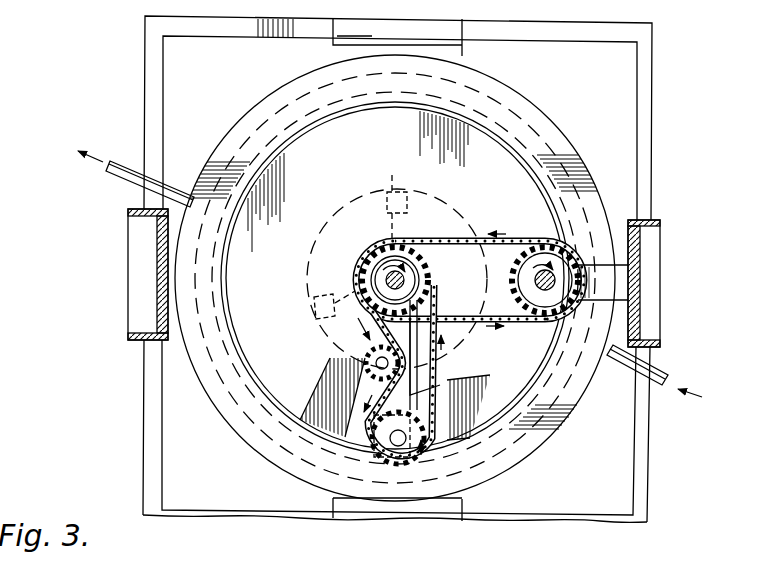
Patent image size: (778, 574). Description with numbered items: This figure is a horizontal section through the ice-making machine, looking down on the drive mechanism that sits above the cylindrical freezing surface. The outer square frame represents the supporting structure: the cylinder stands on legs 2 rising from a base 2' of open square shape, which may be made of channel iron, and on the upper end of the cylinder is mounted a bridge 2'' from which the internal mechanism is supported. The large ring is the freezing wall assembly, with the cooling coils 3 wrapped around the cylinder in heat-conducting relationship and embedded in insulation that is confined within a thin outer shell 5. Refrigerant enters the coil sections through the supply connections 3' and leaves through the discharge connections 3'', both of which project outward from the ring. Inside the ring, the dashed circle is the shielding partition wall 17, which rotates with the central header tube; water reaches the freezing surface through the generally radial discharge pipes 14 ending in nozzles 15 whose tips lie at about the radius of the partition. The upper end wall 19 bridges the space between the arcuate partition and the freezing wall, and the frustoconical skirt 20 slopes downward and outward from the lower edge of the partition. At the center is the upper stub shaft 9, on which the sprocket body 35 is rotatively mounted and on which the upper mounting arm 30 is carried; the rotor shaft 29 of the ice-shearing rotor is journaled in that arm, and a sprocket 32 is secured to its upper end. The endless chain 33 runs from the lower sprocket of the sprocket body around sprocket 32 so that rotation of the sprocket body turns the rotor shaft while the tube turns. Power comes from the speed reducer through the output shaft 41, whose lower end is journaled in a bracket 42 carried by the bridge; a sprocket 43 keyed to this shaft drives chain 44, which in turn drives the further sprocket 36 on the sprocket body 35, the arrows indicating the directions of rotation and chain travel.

The legs 2 is at (388, 275).
The base 2' is at (397, 269).
The bridge 2'' is at (391, 276).
The cooling coils 3 is at (395, 278).
The supply connections 3' is at (654, 371).
The discharge connections 3'' is at (136, 164).
The thin outer shell 5 is at (430, 26).
The upper stub shaft 9 is at (418, 258).
The discharge pipes 14 is at (390, 224).
The nozzles 15 is at (394, 190).
The shielding partition wall 17 is at (306, 280).
The upper end wall 19 is at (279, 349).
The frustoconical skirt 20 is at (498, 198).
The rotor shaft 29 is at (405, 442).
The upper mounting arm 30 is at (440, 392).
The sprocket 32 is at (372, 458).
The endless chain 33 is at (362, 364).
The sprocket body 35 is at (382, 276).
The further sprocket 36 is at (362, 316).
The output shaft 41 is at (518, 280).
The bracket 42 is at (603, 282).
The sprocket 43 is at (526, 320).
The chain 44 is at (542, 242).